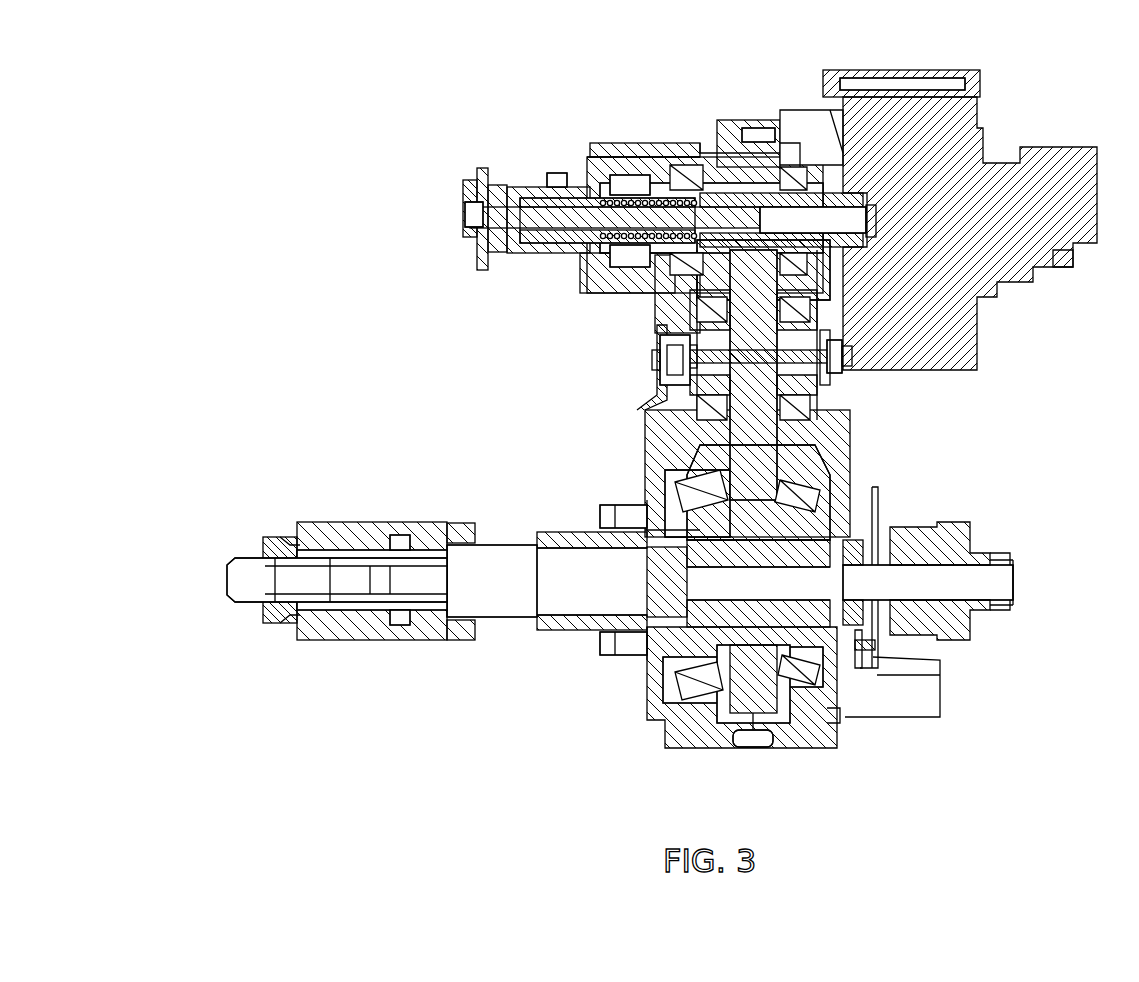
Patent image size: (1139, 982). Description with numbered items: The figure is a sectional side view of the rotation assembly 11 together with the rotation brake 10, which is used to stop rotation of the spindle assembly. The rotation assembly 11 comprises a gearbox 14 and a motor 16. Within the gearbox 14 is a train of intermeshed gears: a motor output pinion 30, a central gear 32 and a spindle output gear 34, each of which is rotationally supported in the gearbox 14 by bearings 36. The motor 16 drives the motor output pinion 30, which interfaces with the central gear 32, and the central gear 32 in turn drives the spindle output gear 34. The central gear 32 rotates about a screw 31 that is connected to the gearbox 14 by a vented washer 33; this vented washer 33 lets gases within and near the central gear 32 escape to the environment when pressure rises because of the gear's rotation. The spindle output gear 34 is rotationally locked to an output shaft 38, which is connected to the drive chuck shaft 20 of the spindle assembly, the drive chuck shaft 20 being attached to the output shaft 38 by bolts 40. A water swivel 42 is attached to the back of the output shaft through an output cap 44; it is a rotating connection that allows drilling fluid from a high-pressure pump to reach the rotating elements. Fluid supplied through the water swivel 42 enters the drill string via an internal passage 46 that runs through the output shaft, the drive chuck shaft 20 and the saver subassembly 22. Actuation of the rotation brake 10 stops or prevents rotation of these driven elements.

The rotation brake 10 is at (528, 183).
The rotation assembly 11 is at (435, 97).
The gearbox 14 is at (658, 330).
The motor 16 is at (970, 357).
The drive chuck shaft 20 is at (556, 625).
The saver subassembly 22 is at (282, 533).
The motor output pinion 30 is at (870, 240).
The screw 31 is at (835, 355).
The central gear 32 is at (690, 382).
The vented washer 33 is at (690, 352).
The spindle output gear 34 is at (760, 473).
The bearings 36 is at (703, 170).
The output shaft 38 is at (848, 665).
The bolts 40 is at (640, 507).
The water swivel 42 is at (955, 613).
The output cap 44 is at (843, 547).
The internal passage 46 is at (502, 567).